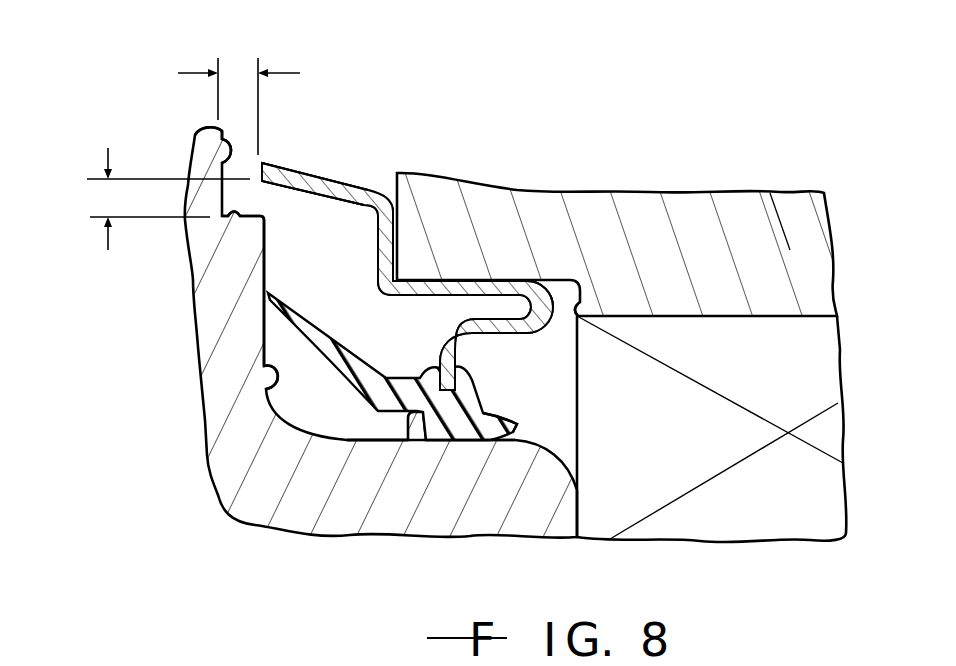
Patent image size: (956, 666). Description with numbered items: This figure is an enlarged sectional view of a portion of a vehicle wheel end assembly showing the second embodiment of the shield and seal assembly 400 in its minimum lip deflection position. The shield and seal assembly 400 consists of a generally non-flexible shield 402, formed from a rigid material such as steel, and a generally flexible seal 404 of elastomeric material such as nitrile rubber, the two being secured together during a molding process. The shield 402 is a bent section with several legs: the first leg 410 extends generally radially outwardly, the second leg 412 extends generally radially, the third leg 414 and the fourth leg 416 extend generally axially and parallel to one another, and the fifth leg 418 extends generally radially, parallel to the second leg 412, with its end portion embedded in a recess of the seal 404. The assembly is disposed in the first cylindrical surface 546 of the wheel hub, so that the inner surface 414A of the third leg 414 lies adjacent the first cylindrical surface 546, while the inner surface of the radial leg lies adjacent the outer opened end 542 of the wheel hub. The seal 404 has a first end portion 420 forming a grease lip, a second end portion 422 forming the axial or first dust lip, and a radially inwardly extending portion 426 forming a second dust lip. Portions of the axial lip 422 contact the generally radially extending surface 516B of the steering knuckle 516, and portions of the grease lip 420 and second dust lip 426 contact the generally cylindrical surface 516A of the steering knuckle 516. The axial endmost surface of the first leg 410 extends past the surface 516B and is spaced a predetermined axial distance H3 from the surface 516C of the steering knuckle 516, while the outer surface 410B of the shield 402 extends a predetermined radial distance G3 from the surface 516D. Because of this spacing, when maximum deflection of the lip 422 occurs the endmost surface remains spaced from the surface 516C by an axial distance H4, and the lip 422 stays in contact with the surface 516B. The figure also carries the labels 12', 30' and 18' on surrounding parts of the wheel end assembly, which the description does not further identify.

The shield and seal assembly 400 is at (433, 111).
The shield 402 is at (347, 177).
The seal 404 is at (360, 351).
The first leg 410 is at (312, 176).
The outer surface of the shield 410B is at (294, 188).
The second leg 412 is at (376, 268).
The third leg 414 is at (418, 296).
The inner surface of the third leg 414A is at (500, 280).
The fourth leg 416 is at (518, 333).
The fifth leg 418 is at (450, 350).
The first end portion 420 is at (516, 416).
The second end portion 422 is at (262, 302).
The radially inwardly extending portion 426 is at (412, 441).
The steering knuckle 516 is at (258, 531).
The generally cylindrical surface of the steering knuckle 516A is at (380, 433).
The generally radially extending surface of the steering knuckle 516B is at (268, 385).
The surface of the steering knuckle 516C is at (200, 136).
The surface of the steering knuckle 516D is at (256, 220).
The outer opened end of the wheel hub 542 is at (378, 251).
The first cylindrical surface of the wheel hub 546 is at (447, 307).
The first member 12' is at (617, 225).
The body 30' is at (786, 202).
The second member 18' is at (711, 449).
The predetermined axial distance H3 is at (242, 50).
The predetermined radial distance G3 is at (96, 195).
The axial distance H4 is at (252, 665).